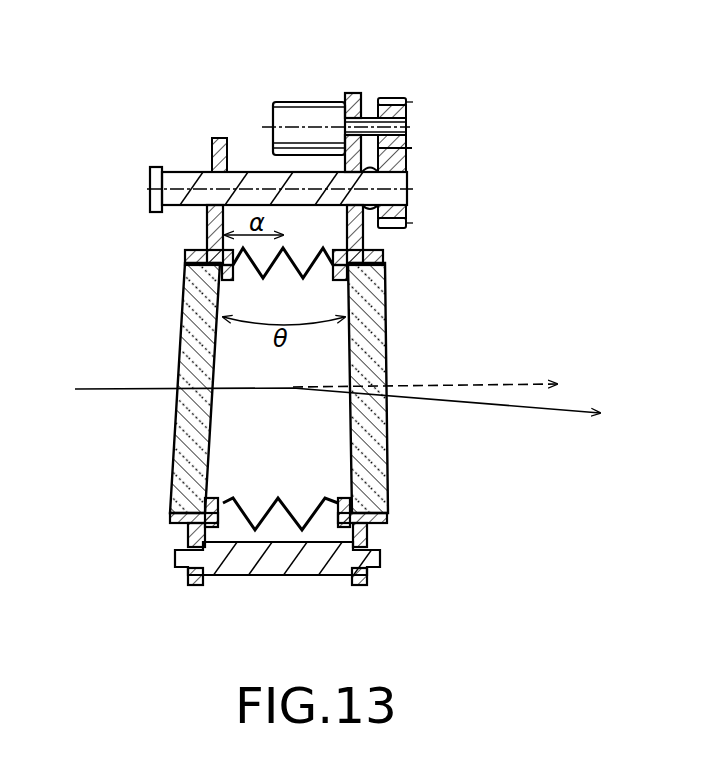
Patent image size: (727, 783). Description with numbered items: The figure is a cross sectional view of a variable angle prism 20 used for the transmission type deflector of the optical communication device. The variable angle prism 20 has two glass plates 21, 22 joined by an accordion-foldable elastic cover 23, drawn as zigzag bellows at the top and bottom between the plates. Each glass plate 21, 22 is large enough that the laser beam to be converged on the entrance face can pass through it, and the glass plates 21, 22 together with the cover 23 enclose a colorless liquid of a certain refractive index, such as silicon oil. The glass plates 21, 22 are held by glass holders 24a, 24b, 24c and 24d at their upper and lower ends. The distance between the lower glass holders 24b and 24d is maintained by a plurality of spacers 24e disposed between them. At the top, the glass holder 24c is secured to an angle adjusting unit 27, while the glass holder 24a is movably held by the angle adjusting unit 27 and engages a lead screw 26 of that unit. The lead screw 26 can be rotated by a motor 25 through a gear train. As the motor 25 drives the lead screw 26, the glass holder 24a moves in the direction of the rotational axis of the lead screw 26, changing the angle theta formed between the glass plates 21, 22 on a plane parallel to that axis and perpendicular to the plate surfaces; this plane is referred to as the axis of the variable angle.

The variable angle prism 20 is at (430, 94).
The glass plate 21 is at (190, 336).
The glass plate 22 is at (377, 353).
The accordion-foldable elastic cover 23 is at (273, 273).
The glass holder 24a is at (187, 257).
The glass holder 24b is at (183, 523).
The glass holder 24c is at (383, 257).
The glass holder 24d is at (370, 527).
The spacer 24e is at (273, 560).
The motor 25 is at (291, 105).
The lead screw 26 is at (178, 172).
The angle adjusting unit 27 is at (167, 60).